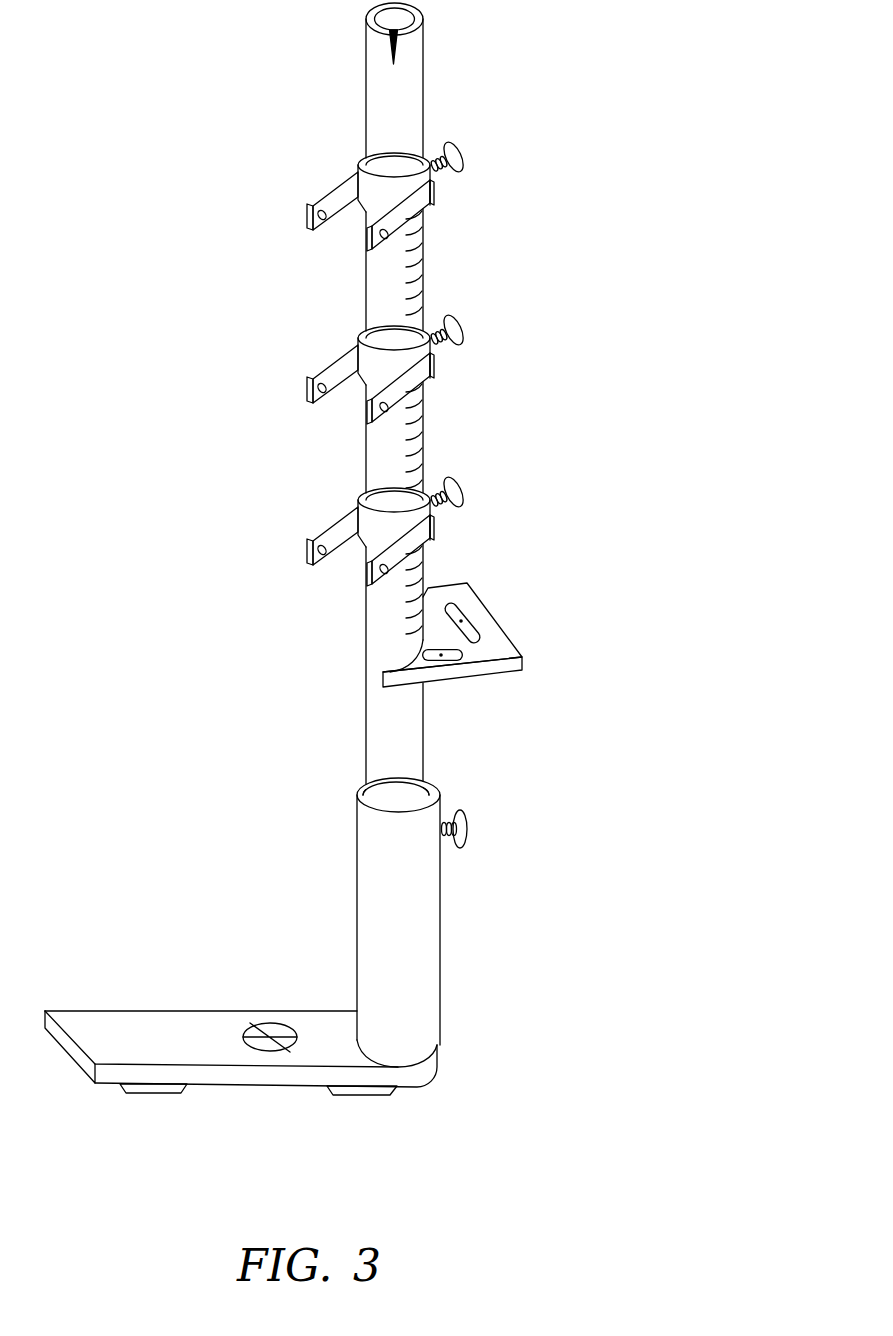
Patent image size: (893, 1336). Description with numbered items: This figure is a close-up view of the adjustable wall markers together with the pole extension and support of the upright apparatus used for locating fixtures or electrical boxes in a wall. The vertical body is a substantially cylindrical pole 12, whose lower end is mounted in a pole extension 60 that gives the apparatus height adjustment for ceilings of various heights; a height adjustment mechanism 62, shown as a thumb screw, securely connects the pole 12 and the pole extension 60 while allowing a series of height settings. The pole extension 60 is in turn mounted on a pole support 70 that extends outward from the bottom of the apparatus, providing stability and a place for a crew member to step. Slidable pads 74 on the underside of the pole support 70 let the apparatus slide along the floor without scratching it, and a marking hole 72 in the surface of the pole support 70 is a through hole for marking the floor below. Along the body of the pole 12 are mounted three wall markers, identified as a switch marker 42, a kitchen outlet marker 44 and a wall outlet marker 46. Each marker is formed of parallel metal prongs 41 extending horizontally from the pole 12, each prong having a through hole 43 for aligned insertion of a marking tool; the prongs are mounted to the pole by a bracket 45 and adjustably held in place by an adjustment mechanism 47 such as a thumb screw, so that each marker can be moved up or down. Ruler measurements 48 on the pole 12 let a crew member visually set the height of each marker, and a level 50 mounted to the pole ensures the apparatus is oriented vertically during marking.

The pole 12 is at (368, 628).
The parallel metal prongs 41 is at (384, 191).
The switch marker 42 is at (293, 218).
The through hole 43 is at (370, 231).
The kitchen outlet marker 44 is at (307, 392).
The bracket 45 is at (433, 192).
The wall outlet marker 46 is at (307, 556).
The adjustment mechanism 47 is at (483, 141).
The ruler measurements 48 is at (420, 262).
The level 50 is at (484, 597).
The pole extension 60 is at (357, 875).
The height adjustment mechanism 62 is at (468, 820).
The pole support 70 is at (90, 1010).
The marking hole 72 is at (252, 1020).
The slidable pads 74 is at (377, 1094).